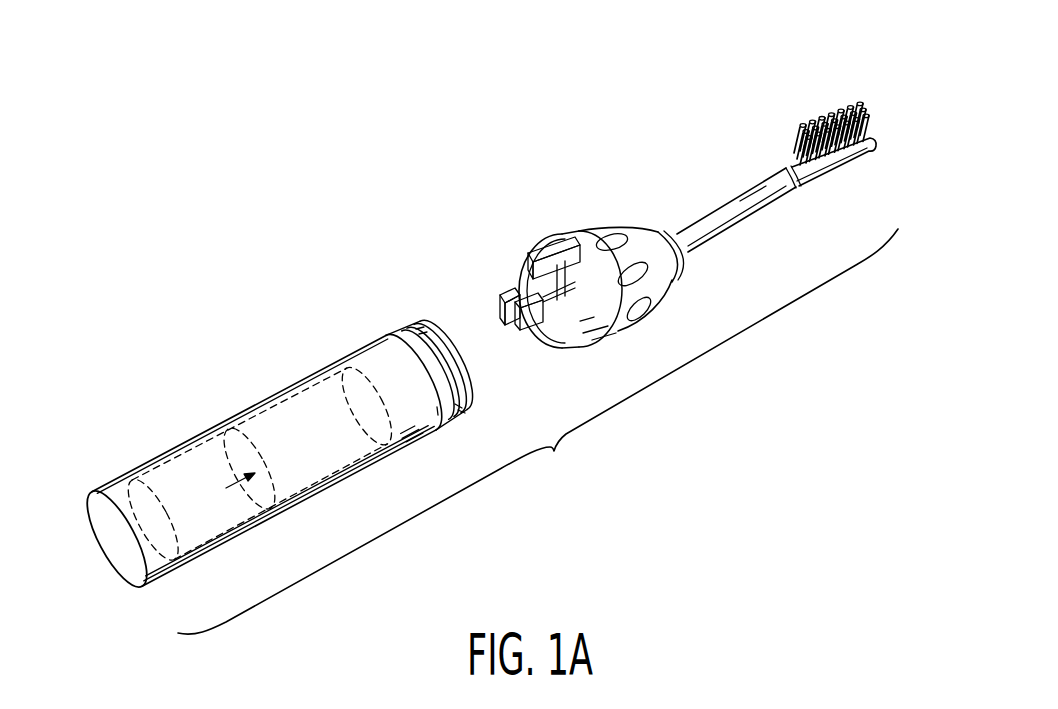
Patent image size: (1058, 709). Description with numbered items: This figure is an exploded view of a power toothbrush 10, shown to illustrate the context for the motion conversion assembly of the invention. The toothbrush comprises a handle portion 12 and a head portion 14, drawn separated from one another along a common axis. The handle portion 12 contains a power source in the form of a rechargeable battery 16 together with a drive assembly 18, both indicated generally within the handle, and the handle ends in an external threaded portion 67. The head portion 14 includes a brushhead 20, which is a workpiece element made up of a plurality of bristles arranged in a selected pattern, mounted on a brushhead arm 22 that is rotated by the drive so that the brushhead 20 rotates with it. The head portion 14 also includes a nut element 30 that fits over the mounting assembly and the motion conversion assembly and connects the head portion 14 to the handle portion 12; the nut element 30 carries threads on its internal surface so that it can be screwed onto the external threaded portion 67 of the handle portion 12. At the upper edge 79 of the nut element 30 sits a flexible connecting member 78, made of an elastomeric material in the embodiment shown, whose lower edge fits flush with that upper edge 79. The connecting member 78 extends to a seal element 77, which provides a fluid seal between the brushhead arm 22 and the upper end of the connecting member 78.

The power toothbrush 10 is at (538, 431).
The handle portion 12 is at (254, 402).
The head portion 14 is at (694, 186).
The rechargeable battery 16 is at (222, 551).
The drive assembly 18 is at (307, 412).
The brushhead 20 is at (847, 113).
The brushhead arm 22 is at (734, 227).
The nut element 30 is at (590, 233).
The external threaded portion 67 is at (412, 322).
The seal element 77 is at (545, 250).
The flexible connecting member 78 is at (681, 273).
The upper edge of nut 79 is at (653, 234).